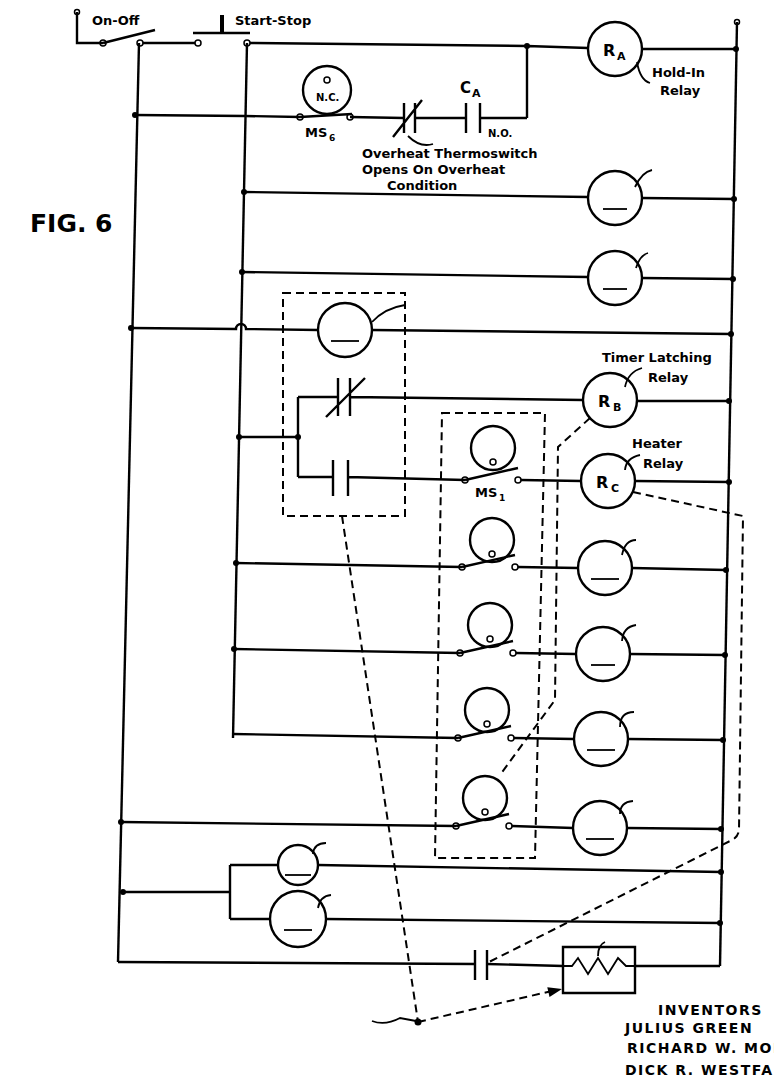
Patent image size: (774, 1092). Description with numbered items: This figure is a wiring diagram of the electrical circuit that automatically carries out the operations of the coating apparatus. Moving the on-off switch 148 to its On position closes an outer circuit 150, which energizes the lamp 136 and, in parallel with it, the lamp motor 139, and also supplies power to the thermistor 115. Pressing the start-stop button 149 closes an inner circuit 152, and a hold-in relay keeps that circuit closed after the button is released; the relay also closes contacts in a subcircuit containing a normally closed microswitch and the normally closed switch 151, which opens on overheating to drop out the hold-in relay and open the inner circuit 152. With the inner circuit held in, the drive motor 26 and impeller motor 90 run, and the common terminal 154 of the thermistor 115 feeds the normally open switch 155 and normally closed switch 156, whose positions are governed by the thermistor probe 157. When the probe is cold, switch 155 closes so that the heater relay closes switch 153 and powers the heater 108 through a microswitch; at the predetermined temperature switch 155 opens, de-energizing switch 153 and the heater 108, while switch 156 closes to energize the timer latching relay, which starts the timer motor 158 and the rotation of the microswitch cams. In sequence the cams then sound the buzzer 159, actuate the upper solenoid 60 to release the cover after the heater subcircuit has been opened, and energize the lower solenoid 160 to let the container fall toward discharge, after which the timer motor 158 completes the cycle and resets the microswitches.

The on-off switch 148 is at (132, 40).
The start-stop button 149 is at (236, 42).
The normally closed switch 151 is at (416, 100).
The drive motor 26 is at (490, 189).
The impeller motor 90 is at (489, 271).
The thermistor 115 is at (432, 330).
The normally closed switch 156 is at (339, 379).
The common terminal 154 is at (300, 438).
The normally open switch 155 is at (340, 468).
The inner circuit 152 is at (228, 602).
The outer circuit 150 is at (118, 638).
The buzzer 159 is at (482, 556).
The upper solenoid 60 is at (481, 642).
The lower solenoid 160 is at (479, 727).
The timer motor 158 is at (422, 815).
The lamp 136 is at (477, 861).
The lamp motor 139 is at (476, 918).
The switch 153 is at (486, 950).
The heater 108 is at (617, 975).
The thermistor probe 157 is at (424, 1022).